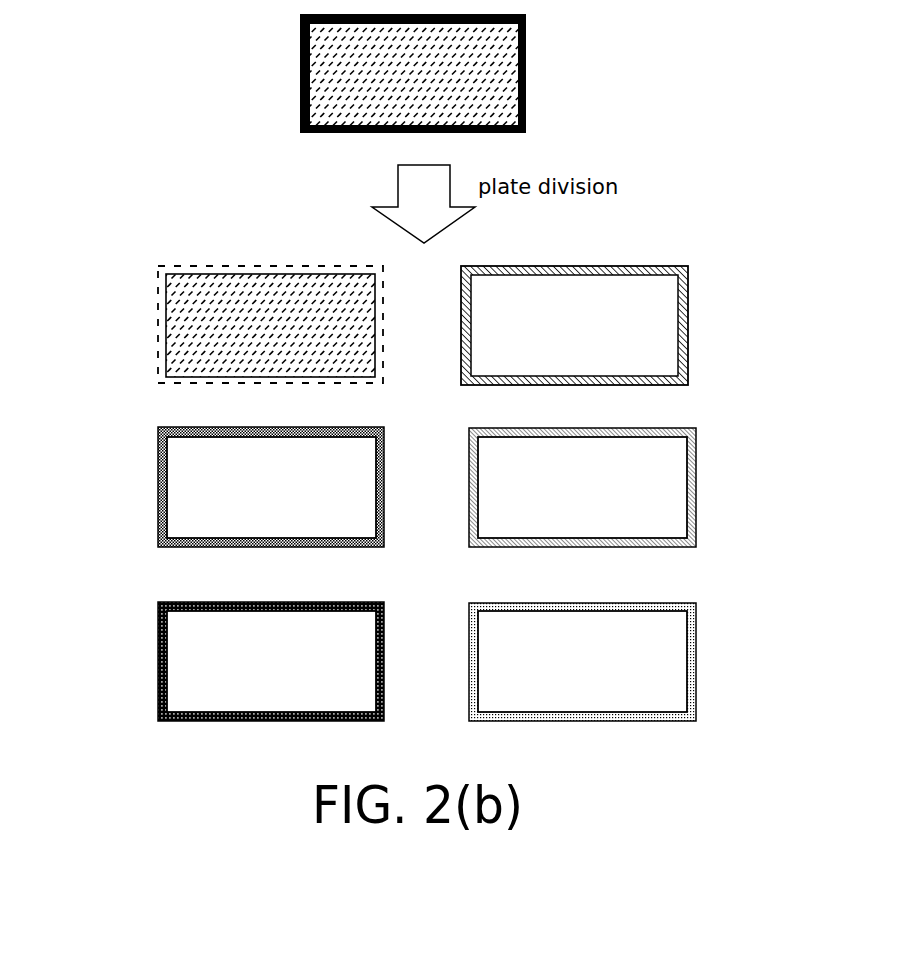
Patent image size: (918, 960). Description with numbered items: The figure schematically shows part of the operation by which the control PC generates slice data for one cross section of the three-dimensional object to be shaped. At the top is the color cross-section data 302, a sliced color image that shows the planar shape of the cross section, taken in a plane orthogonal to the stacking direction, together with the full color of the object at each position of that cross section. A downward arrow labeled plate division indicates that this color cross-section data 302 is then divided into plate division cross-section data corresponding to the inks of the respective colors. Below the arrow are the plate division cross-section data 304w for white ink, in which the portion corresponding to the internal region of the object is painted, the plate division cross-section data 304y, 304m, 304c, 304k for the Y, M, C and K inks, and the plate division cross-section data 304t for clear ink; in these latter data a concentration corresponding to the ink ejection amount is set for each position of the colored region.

The color cross-section data 302 is at (527, 73).
The plate division cross-section data corresponding to white ink 304w is at (177, 297).
The plate division cross-section data corresponding to yellow ink 304y is at (683, 290).
The plate division cross-section data corresponding to magenta ink 304m is at (159, 473).
The plate division cross-section data corresponding to cyan ink 304c is at (697, 475).
The plate division cross-section data corresponding to black ink 304k is at (159, 657).
The plate division cross-section data corresponding to clear ink 304t is at (697, 639).